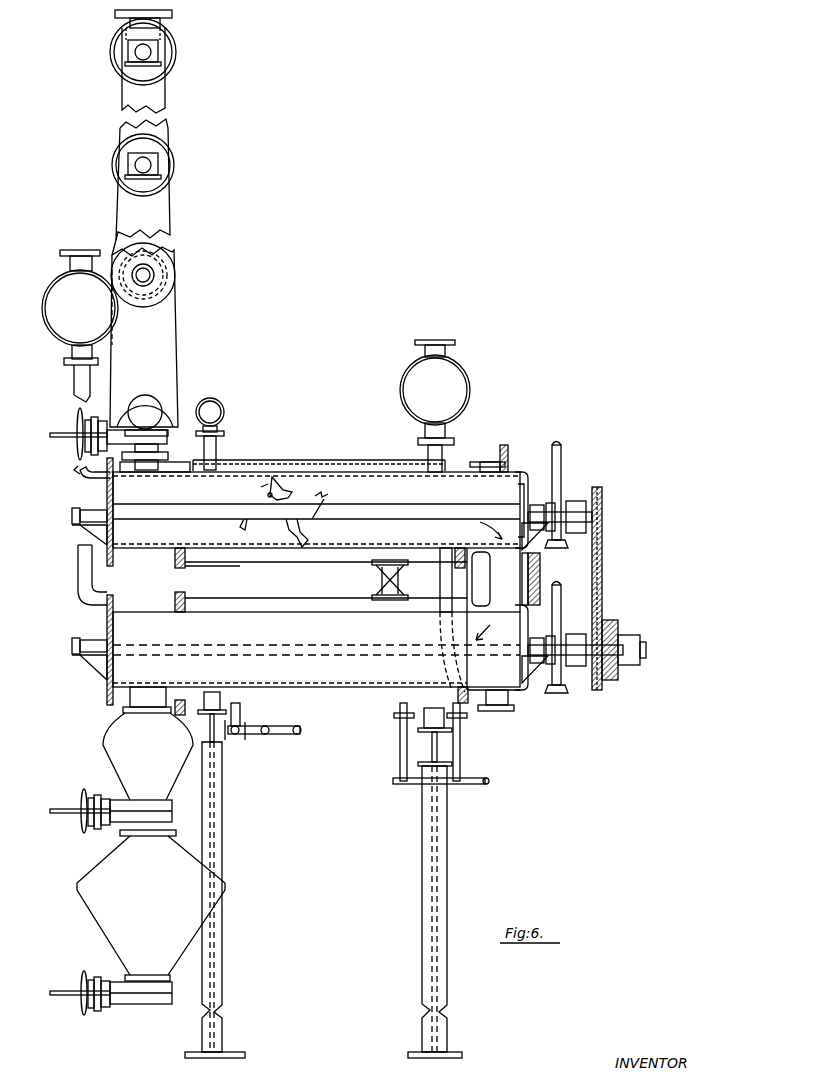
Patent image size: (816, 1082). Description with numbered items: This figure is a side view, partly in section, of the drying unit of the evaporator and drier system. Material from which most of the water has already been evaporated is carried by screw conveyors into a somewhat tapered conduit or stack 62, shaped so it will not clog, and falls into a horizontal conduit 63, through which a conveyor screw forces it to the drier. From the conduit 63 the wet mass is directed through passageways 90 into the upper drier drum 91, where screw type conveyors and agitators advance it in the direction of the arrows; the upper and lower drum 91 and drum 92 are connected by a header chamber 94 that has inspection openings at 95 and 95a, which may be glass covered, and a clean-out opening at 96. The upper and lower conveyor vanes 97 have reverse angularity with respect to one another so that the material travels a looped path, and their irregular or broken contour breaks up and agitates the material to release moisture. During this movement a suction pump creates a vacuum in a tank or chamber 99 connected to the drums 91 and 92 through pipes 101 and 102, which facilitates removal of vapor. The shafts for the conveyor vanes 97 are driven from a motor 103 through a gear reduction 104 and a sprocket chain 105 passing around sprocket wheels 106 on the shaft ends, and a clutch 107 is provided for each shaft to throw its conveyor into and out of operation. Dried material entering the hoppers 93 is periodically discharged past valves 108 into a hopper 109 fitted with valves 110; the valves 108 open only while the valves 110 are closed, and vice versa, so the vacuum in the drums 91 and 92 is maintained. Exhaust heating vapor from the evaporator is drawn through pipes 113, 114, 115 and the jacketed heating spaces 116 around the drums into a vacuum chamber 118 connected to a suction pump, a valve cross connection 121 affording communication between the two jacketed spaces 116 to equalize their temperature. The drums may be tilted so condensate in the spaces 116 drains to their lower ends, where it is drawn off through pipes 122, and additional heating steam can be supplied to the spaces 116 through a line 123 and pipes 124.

The conduit or stack 62 is at (170, 128).
The tank or chamber 99 is at (44, 290).
The horizontal conduit 63 is at (145, 412).
The line 123 is at (220, 402).
The pipes 124 is at (217, 446).
The pipe 101 is at (80, 476).
The jacketed heating spaces 116 is at (330, 462).
The drier drum 91 is at (266, 470).
The passageways 90 is at (150, 468).
The conveyor vanes 97 is at (262, 494).
The inspection opening 95 is at (506, 458).
The header chamber 94 is at (524, 476).
The inspection opening 95a is at (540, 572).
The drier drum 92 is at (347, 682).
The valve cross connection 121 is at (370, 580).
The pipe 102 is at (78, 585).
The clutch 107 is at (563, 474).
The sprocket wheels 106 is at (603, 510).
The sprocket chain 105 is at (603, 580).
The gear reduction 104 is at (615, 618).
The motor 103 is at (636, 636).
The vacuum chamber 118 is at (470, 372).
The clean-out opening 96 is at (502, 706).
The hoppers 93 is at (100, 748).
The valves 108 is at (116, 822).
The hopper 109 is at (100, 922).
The valves 110 is at (146, 1004).
The pipes 122 is at (399, 754).
The pipe 114 is at (265, 728).
The pipe 113 is at (235, 735).
The pipe 115 is at (297, 734).